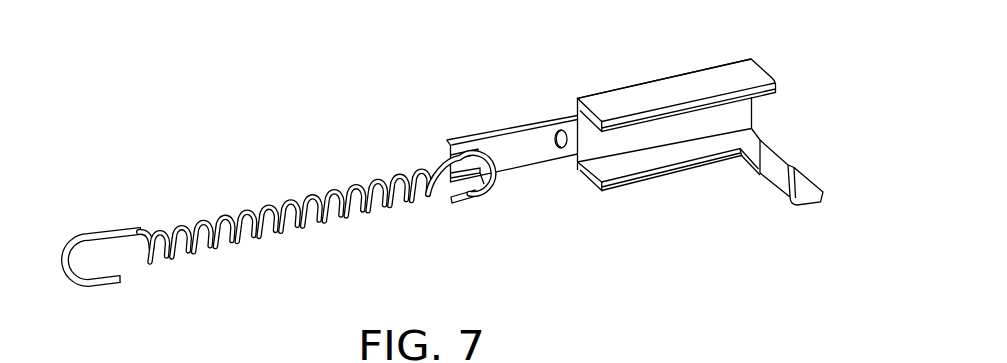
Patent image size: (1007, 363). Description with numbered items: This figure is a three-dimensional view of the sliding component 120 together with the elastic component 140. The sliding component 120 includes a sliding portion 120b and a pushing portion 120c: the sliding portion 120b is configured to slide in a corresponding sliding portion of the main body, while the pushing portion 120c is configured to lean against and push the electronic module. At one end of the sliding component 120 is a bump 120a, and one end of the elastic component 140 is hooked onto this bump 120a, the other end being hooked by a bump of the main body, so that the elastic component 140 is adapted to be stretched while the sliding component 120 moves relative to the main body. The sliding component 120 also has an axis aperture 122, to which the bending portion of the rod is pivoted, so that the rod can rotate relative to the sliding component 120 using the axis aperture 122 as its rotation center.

The sliding component 120 is at (635, 148).
The bump 120a is at (481, 196).
The sliding portion 120b is at (628, 102).
The pushing portion 120c is at (778, 172).
The axis aperture 122 is at (556, 148).
The elastic component 140 is at (321, 234).